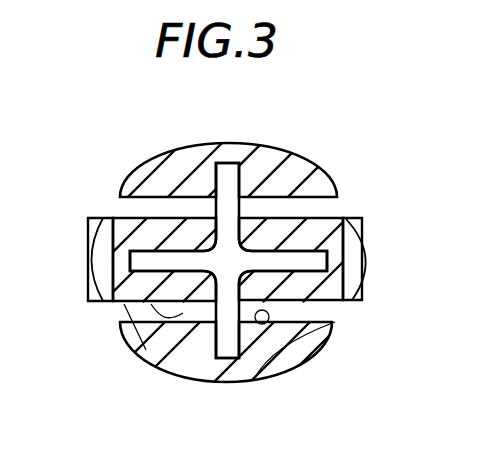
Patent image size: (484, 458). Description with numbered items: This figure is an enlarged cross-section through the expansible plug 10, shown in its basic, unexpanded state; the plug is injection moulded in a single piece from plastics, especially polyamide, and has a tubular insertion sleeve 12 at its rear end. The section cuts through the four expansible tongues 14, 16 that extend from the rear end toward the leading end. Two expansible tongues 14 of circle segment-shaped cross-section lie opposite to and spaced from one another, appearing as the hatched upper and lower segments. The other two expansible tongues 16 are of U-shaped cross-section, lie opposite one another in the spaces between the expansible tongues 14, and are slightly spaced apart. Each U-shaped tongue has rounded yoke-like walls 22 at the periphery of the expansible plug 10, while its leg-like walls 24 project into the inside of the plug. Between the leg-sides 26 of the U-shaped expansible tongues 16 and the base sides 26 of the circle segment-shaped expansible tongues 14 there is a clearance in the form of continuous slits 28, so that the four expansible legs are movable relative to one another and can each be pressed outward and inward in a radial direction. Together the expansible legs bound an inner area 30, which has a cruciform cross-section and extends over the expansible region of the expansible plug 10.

The expansible plug 10 is at (346, 378).
The tubular insertion sleeve 12 is at (320, 321).
The expansible tongues of circle segment-shaped cross-section 14 is at (293, 170).
The expansible tongues of U-shaped cross-section 16 is at (93, 231).
The yoke-like walls 22 is at (337, 285).
The leg-like walls 24 is at (268, 293).
The leg-sides and base sides 26 is at (261, 325).
The continuous slits 28 is at (144, 346).
The inner area 30 is at (213, 258).